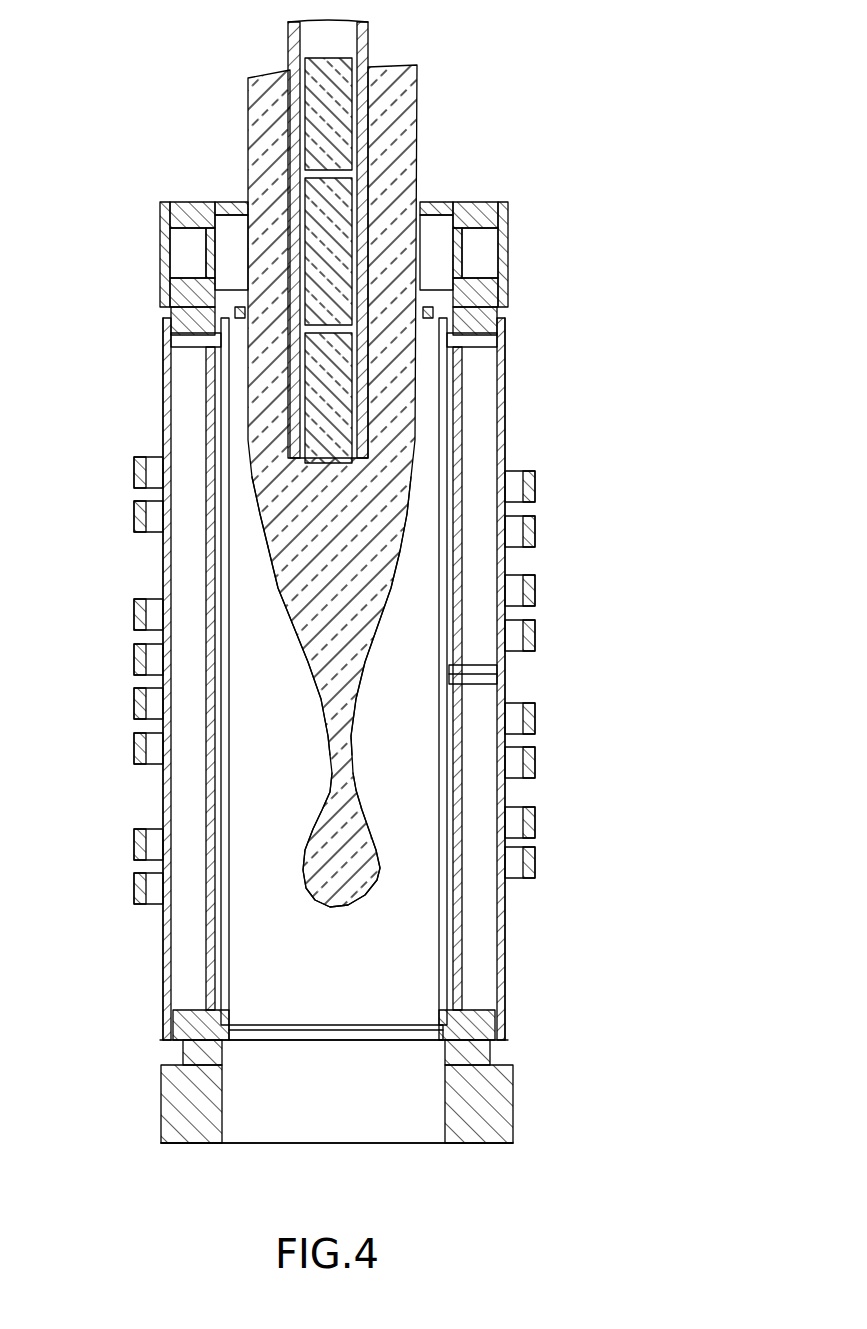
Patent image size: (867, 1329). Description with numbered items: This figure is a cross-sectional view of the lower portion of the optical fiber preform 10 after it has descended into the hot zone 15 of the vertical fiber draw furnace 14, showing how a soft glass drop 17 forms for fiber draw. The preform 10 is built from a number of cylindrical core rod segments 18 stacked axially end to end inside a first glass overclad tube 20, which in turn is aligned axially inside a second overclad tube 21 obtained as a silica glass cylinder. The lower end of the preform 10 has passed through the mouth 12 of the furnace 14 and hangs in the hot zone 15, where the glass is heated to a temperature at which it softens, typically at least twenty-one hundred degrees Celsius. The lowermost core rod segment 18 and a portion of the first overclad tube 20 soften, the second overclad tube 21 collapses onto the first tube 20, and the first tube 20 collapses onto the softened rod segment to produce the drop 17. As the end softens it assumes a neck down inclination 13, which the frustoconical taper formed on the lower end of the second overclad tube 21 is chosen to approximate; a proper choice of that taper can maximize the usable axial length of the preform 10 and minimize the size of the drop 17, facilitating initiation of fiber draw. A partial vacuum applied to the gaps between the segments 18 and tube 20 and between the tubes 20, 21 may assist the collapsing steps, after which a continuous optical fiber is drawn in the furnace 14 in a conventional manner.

The optical fiber preform 10 is at (420, 163).
The mouth 12 is at (235, 202).
The neck down inclination 13 is at (378, 627).
The fiber draw furnace 14 is at (148, 351).
The hot zone 15 is at (122, 594).
The soft glass drop 17 is at (372, 842).
The core rod segments 18 is at (320, 120).
The first glass overclad tube 20 is at (360, 120).
The second overclad tube 21 is at (248, 78).